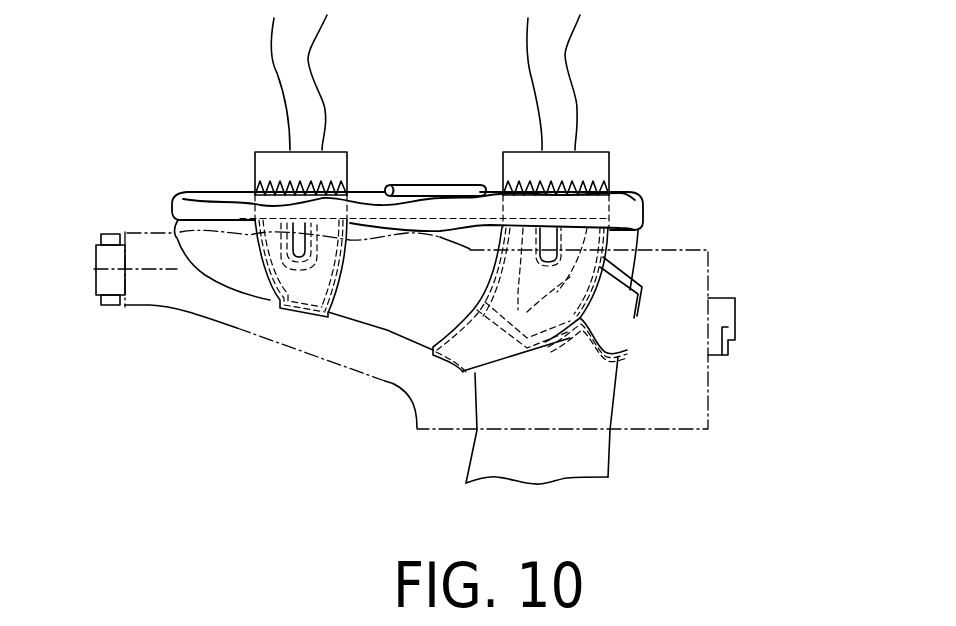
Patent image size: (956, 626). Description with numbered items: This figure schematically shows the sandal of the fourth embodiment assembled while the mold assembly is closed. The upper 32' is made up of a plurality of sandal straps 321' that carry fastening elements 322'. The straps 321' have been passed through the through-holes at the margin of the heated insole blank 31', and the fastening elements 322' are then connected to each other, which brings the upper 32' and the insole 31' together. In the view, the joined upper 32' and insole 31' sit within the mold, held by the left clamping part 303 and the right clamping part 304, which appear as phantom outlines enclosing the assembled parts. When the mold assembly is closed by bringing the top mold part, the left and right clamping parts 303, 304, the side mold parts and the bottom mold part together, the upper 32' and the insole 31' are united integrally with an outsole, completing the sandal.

The left clamping part 303 is at (447, 378).
The right clamping part 304 is at (680, 400).
The insole blank 31' is at (483, 214).
The upper 32' is at (625, 312).
The sandal straps 321' is at (520, 180).
The fastening elements 322' is at (520, 82).